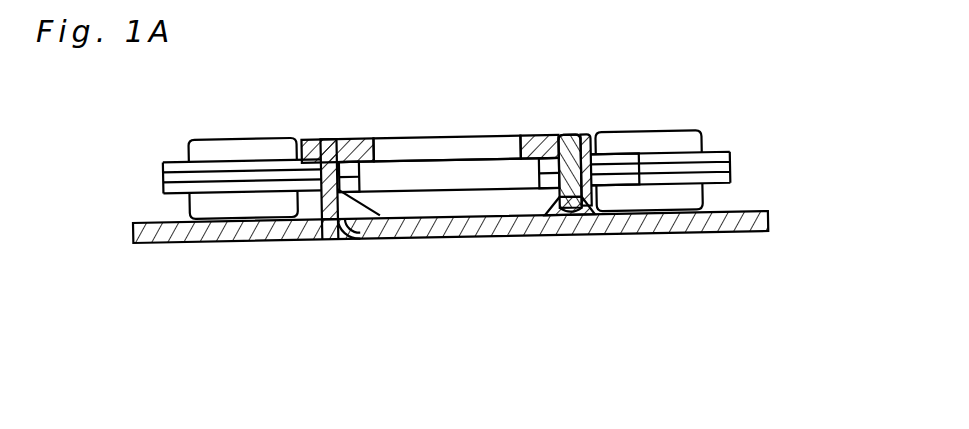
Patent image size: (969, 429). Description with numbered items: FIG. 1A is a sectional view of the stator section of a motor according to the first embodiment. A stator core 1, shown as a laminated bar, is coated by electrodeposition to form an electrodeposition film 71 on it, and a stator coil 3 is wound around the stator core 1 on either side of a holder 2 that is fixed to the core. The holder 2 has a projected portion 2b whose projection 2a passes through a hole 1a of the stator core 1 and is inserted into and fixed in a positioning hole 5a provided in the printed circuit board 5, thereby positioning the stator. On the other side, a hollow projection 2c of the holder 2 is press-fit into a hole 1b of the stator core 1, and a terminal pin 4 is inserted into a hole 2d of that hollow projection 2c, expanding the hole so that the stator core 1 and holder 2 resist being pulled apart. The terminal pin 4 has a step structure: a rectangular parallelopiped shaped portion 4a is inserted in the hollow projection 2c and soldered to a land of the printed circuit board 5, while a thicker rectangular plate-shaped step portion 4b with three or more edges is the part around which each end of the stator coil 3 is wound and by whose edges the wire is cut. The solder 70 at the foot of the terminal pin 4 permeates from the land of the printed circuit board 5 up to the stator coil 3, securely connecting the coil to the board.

The stator core 1 is at (715, 150).
The hole 1a is at (346, 136).
The hole 1b is at (640, 160).
The holder 2 is at (537, 135).
The projection 2a is at (330, 228).
The projected portion 2b is at (380, 220).
The hollow projection 2c is at (543, 197).
The hole 2d is at (593, 133).
The stator coil 3 is at (645, 137).
The terminal pin 4 is at (565, 215).
The rectangular parallelopiped shaped portion 4a is at (568, 133).
The rectangular plate-shaped step portion 4b is at (582, 218).
The printed circuit board 5 is at (255, 232).
The positioning hole 5a is at (355, 240).
The solder 70 is at (597, 217).
The electrodeposition film 71 is at (312, 228).